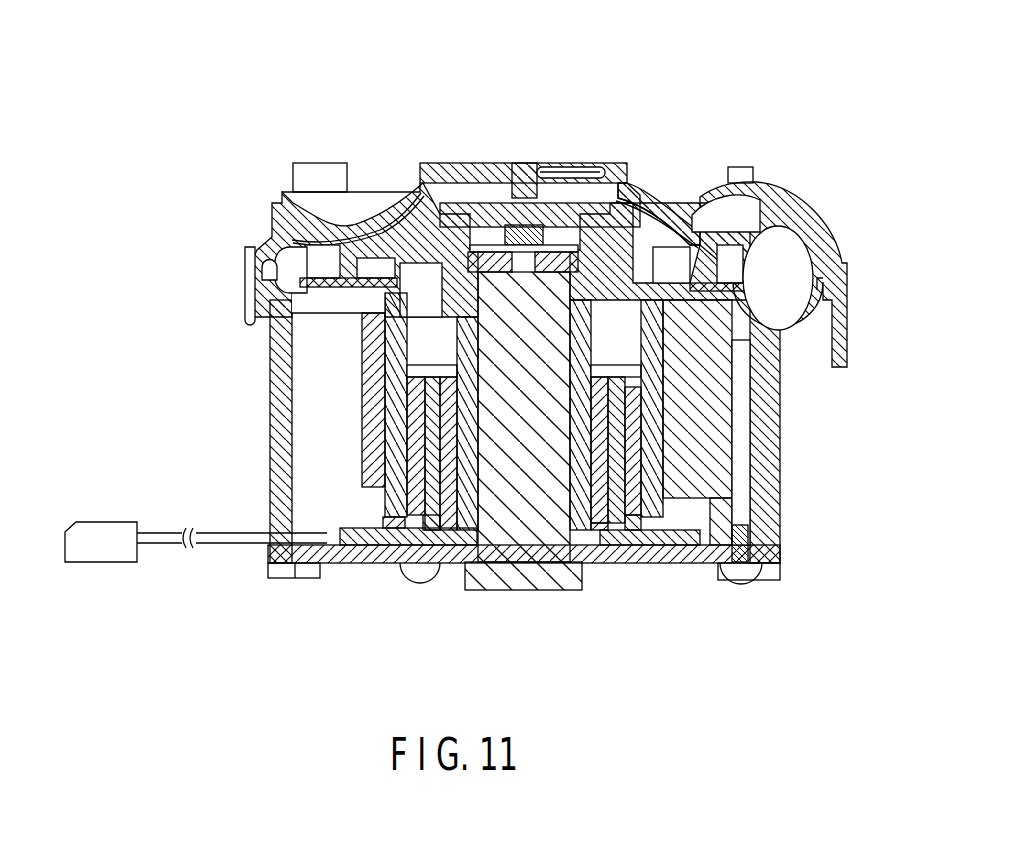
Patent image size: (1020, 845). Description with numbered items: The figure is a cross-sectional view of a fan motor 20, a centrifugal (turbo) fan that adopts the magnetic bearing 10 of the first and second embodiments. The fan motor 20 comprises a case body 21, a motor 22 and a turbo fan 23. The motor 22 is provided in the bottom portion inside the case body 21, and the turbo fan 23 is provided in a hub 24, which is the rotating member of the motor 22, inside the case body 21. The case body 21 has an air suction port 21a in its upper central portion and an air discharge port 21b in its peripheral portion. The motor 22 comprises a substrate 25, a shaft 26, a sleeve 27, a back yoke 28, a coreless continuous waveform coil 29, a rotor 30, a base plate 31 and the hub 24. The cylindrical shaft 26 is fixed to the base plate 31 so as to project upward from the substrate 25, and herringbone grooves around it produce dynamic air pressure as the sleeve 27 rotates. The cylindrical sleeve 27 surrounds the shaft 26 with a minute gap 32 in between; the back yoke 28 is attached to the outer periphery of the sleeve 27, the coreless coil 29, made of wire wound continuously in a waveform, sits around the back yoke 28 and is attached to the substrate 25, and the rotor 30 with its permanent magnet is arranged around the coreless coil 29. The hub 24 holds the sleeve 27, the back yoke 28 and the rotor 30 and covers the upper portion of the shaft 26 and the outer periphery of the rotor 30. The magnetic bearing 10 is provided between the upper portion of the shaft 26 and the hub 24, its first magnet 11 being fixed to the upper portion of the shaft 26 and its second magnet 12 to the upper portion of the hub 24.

The fan motor 20 is at (441, 72).
The magnetic bearing 10 is at (515, 118).
The first magnet 11 is at (505, 222).
The second magnet 12 is at (462, 248).
The case body 21 is at (812, 214).
The air suction port 21a is at (565, 172).
The air discharge port 21b is at (773, 290).
The motor 22 is at (366, 456).
The turbo fan 23 is at (658, 257).
The hub 24 is at (402, 345).
The substrate 25 is at (360, 550).
The shaft 26 is at (526, 568).
The sleeve 27 is at (465, 525).
The back yoke 28 is at (445, 538).
The coreless continuous waveform coil 29 is at (608, 530).
The rotor 30 is at (633, 538).
The base plate 31 is at (622, 552).
The minute gap 32 is at (484, 570).